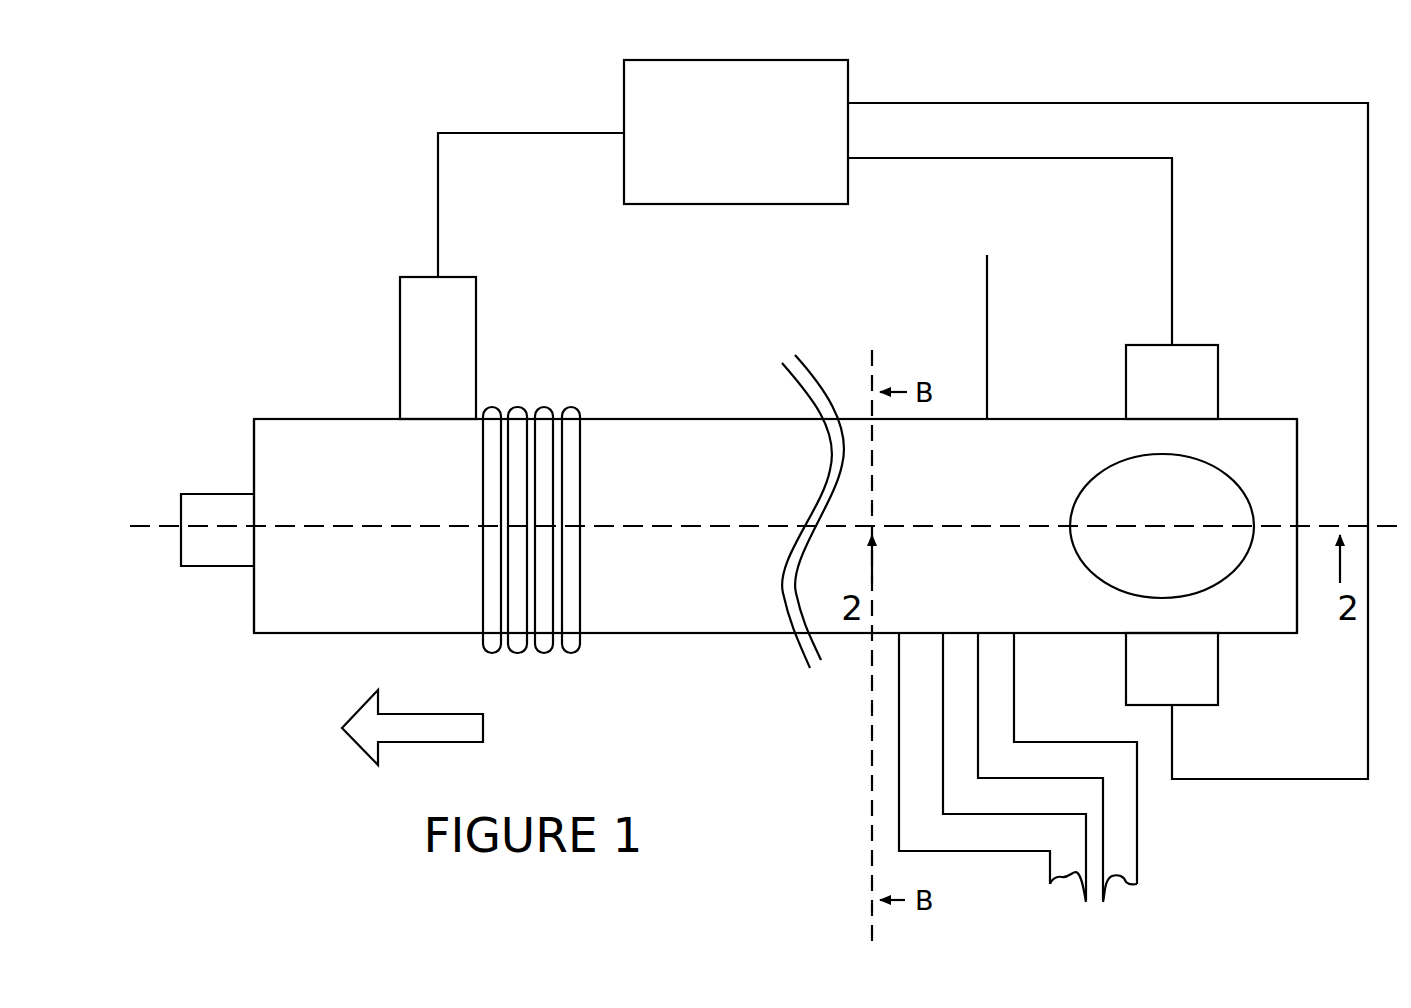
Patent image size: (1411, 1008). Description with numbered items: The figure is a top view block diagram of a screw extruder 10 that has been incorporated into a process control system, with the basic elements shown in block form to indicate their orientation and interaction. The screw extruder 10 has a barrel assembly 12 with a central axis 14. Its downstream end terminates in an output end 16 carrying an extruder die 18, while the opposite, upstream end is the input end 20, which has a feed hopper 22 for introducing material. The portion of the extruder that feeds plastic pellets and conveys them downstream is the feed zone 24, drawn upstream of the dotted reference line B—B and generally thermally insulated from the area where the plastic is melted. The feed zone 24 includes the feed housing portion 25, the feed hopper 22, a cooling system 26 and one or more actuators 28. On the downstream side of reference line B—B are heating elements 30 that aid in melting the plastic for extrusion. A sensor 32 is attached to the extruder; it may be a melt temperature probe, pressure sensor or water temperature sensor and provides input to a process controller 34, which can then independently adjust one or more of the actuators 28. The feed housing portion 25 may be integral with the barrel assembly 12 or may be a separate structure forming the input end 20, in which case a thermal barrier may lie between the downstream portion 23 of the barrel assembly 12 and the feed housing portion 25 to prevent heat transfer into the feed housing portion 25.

The screw extruder 10 is at (752, 388).
The barrel assembly 12 is at (638, 385).
The central axis 14 is at (707, 520).
The output end 16 is at (269, 405).
The extruder die 18 is at (207, 550).
The input end 20 is at (1278, 400).
The feed hopper 22 is at (1108, 465).
The downstream portion 23 is at (725, 415).
The feed zone 24 is at (943, 400).
The feed housing portion 25 is at (982, 321).
The cooling system 26 is at (1119, 831).
The actuators 28 is at (1153, 367).
The heating elements 30 is at (545, 652).
The sensor 32 is at (455, 323).
The process controller 34 is at (643, 97).